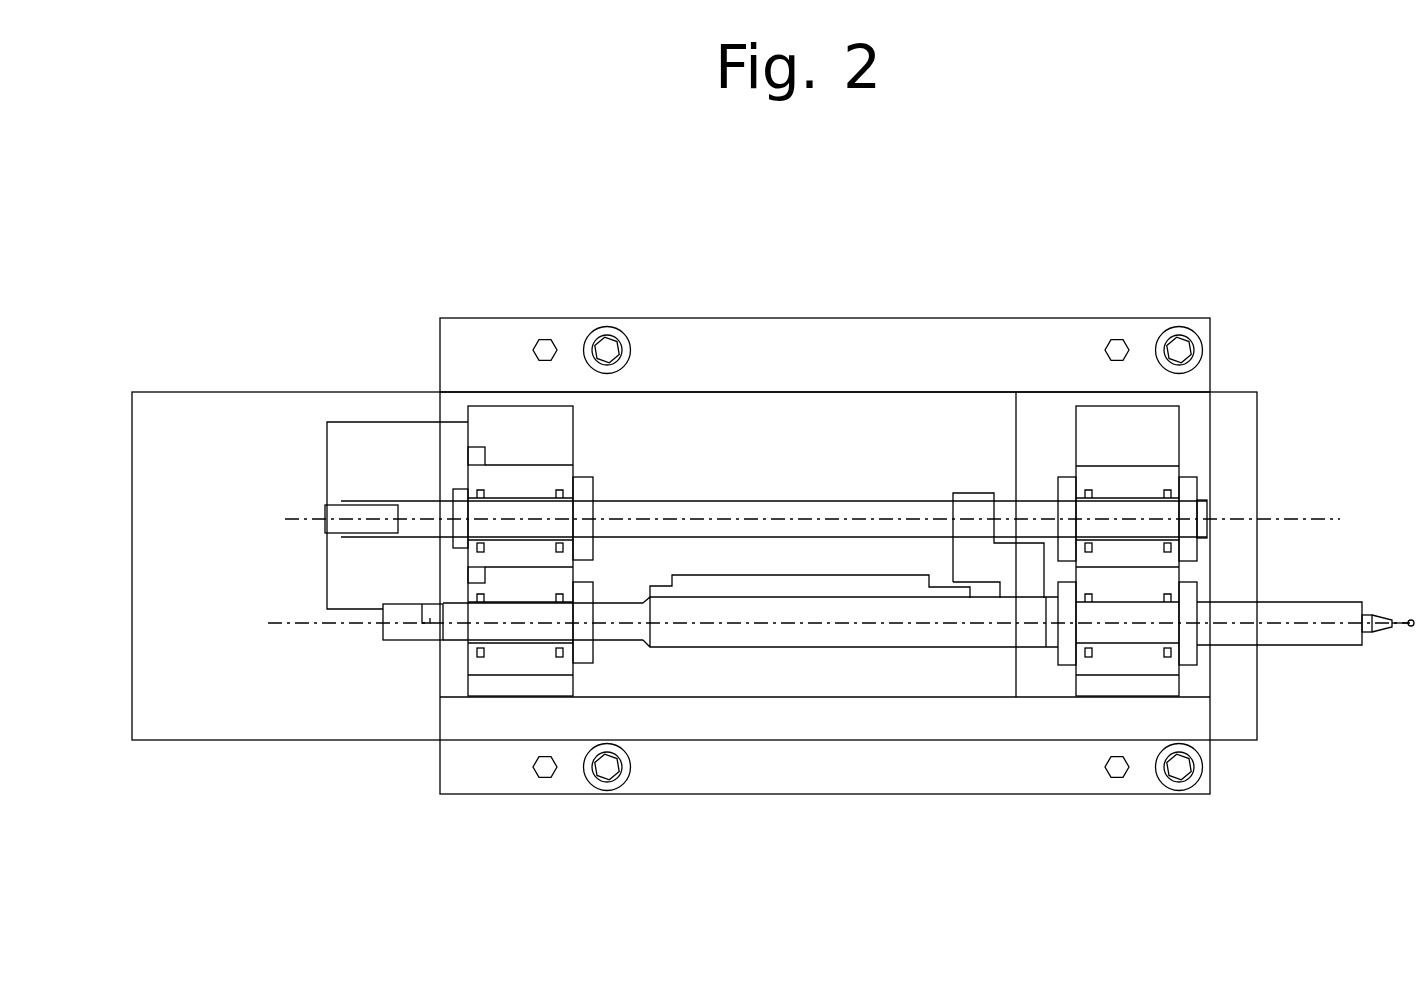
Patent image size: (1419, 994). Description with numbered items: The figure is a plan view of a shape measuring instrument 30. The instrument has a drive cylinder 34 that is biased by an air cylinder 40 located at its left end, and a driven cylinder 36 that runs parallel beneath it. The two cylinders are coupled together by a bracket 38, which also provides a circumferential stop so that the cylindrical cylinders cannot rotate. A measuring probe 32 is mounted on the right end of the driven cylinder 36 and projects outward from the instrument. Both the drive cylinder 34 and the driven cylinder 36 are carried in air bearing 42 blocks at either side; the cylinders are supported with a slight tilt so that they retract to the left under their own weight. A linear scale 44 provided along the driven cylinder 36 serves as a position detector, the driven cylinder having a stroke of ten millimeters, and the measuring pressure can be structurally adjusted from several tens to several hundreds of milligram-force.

The shape measuring instrument 30 is at (1066, 319).
The measuring probe 32 is at (1398, 622).
The drive cylinder 34 is at (738, 507).
The driven cylinder 36 is at (750, 650).
The bracket 38 is at (975, 492).
The air cylinder 40 is at (371, 500).
The air bearing 42 is at (520, 476).
The linear scale 44 is at (848, 590).